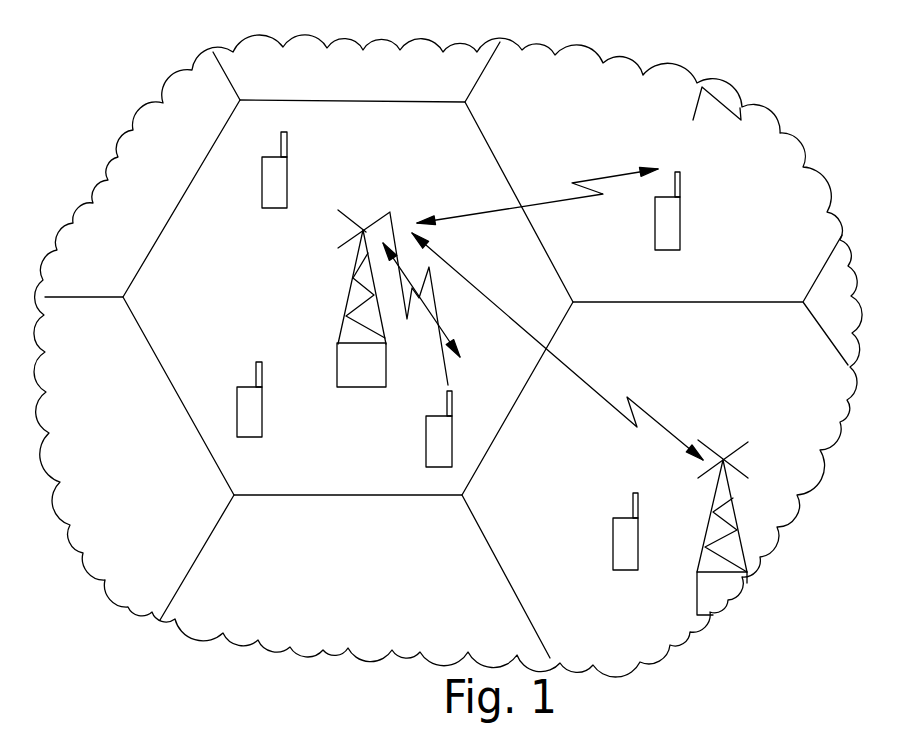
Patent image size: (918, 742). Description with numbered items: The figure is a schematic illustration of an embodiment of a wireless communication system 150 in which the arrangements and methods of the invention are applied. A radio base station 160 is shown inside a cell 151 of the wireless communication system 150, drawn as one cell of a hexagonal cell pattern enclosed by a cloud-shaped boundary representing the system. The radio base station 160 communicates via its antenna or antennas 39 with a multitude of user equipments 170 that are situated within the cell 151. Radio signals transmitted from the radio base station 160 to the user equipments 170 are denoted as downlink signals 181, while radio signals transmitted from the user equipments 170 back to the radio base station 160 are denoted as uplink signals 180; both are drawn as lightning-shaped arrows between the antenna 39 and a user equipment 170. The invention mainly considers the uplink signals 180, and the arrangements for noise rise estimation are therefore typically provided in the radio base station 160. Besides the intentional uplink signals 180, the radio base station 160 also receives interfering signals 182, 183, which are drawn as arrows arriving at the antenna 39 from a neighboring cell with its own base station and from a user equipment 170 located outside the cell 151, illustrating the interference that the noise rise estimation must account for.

The antenna 39 is at (362, 228).
The wireless communication system 150 is at (347, 647).
The cell 151 is at (158, 322).
The radio base station 160 is at (345, 362).
The user equipment 170 is at (272, 193).
The uplink signal 180 is at (432, 347).
The downlink signal 181 is at (450, 320).
The interfering signal 182 is at (593, 397).
The interfering signal 183 is at (592, 177).